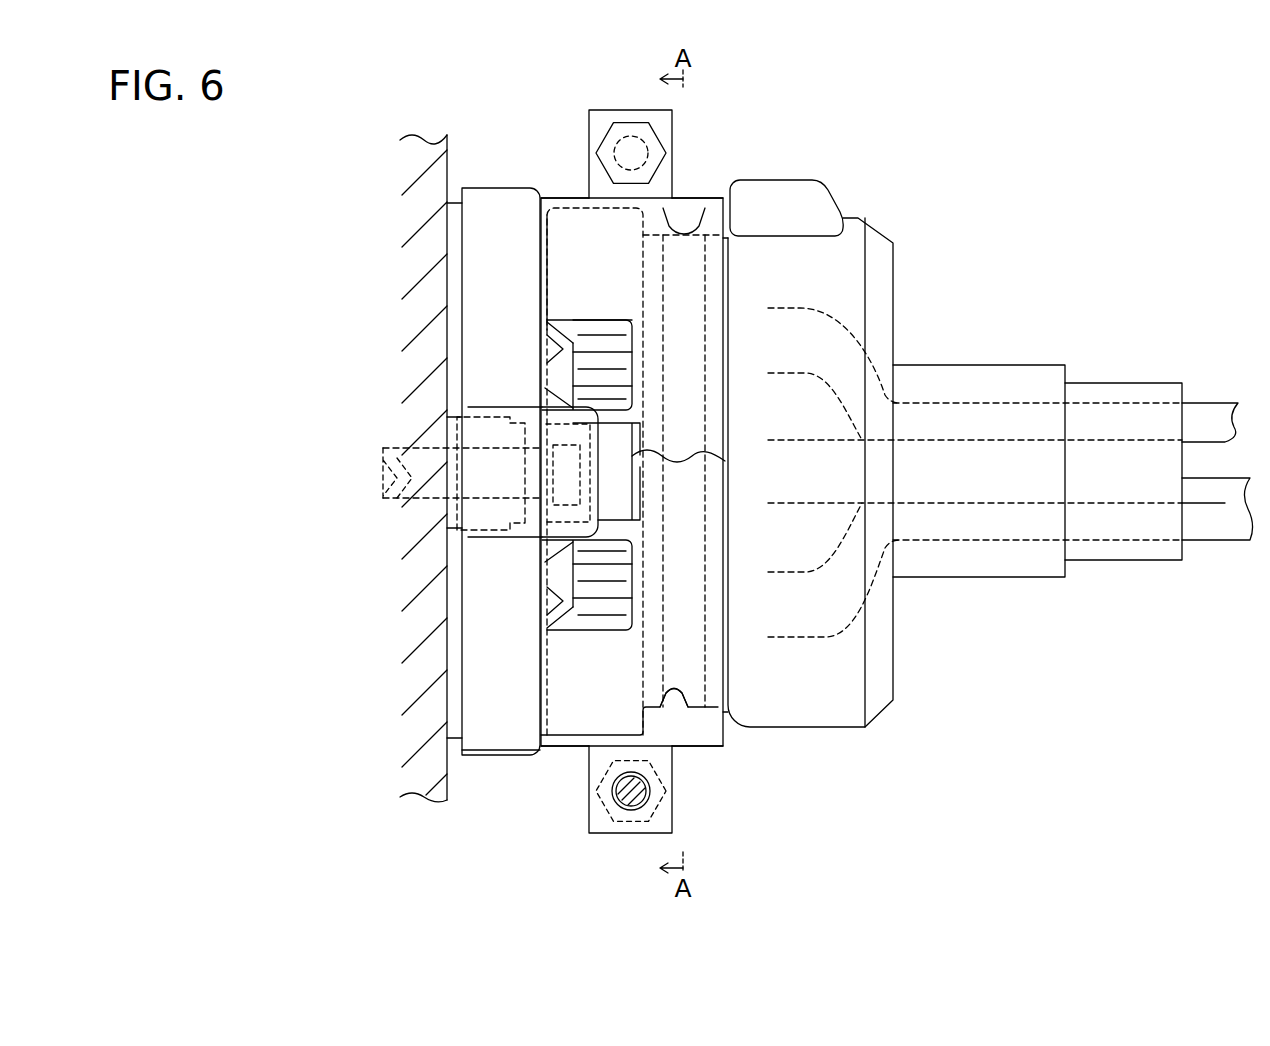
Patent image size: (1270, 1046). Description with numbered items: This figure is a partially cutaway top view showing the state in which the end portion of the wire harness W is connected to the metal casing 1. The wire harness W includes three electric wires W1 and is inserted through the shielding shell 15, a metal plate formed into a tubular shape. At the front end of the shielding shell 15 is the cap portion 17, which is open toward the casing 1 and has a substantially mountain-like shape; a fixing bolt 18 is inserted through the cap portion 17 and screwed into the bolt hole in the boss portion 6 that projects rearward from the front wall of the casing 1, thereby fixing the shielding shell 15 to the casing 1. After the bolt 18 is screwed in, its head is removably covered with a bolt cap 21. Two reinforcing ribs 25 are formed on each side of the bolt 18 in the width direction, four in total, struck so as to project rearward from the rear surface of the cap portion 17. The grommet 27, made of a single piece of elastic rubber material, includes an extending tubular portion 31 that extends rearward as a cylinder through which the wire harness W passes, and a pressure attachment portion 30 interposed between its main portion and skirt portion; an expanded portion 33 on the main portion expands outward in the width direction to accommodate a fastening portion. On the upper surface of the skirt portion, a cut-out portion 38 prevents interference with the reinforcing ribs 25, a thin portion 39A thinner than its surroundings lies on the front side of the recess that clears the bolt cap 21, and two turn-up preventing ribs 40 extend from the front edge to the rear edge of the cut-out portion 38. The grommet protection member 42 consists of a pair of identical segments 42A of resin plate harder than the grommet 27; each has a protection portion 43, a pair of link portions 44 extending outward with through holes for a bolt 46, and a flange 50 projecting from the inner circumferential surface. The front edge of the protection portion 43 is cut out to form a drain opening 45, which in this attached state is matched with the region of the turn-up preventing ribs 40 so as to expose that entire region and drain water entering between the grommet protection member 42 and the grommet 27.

The casing 1 is at (417, 819).
The boss portion 6 is at (480, 477).
The shielding shell 15 is at (512, 774).
The cap portion 17 is at (485, 740).
The fixing bolt 18 is at (567, 472).
The bolt cap 21 is at (567, 435).
The reinforcing ribs 25 is at (562, 403).
The grommet 27 is at (893, 213).
The pressure attachment portion 30 is at (715, 632).
The extending tubular portion 31 is at (993, 572).
The expanded portion 33 is at (798, 192).
The cut-out portion 38 is at (560, 350).
The thin portion 39A is at (613, 478).
The turn-up preventing ribs 40 is at (575, 327).
The grommet protection member 42 is at (577, 176).
The segments 42A is at (570, 222).
The protection portion 43 is at (567, 248).
The link portions 44 is at (604, 120).
The drain opening 45 is at (603, 317).
The bolt 46 is at (647, 140).
The flange 50 is at (686, 228).
The wire harness W is at (1122, 392).
The electric wires W1 is at (817, 477).